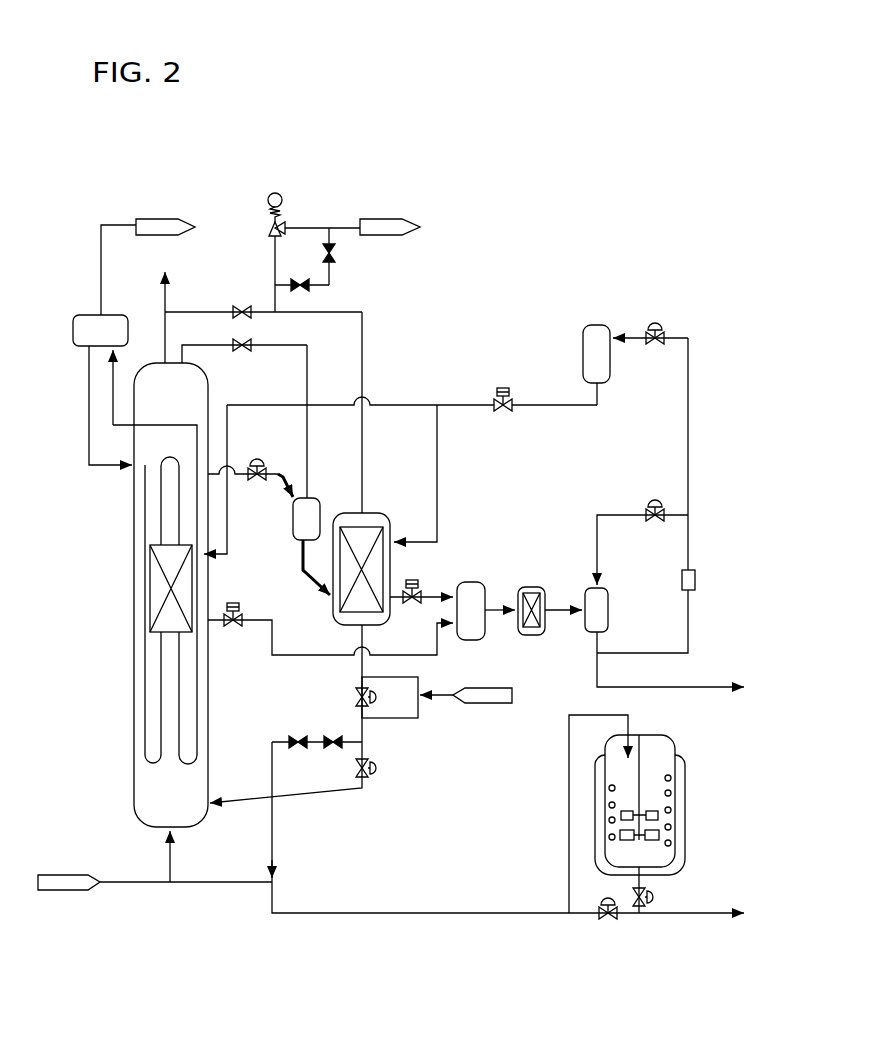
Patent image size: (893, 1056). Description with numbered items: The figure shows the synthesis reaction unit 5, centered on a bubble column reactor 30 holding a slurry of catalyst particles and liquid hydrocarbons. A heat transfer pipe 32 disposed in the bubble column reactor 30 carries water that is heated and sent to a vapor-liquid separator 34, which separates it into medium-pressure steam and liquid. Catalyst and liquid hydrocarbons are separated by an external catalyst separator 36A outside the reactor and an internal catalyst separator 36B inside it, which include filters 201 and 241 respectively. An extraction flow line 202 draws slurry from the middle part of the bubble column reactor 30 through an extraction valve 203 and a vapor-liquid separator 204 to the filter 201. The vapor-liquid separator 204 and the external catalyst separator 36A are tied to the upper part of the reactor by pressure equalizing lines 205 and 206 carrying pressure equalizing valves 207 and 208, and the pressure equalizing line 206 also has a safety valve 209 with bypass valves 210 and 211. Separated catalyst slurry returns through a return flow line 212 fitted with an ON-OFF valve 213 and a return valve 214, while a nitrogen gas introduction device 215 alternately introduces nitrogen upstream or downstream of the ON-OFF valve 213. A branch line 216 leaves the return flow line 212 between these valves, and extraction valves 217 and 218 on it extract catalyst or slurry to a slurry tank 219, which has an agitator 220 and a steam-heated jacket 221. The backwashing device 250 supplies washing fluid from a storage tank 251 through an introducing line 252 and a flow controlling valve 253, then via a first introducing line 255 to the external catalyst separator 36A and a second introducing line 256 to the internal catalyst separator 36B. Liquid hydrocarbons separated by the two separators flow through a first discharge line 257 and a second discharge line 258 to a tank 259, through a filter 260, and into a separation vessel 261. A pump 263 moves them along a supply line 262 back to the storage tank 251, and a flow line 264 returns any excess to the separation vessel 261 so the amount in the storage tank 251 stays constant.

The synthesis reaction unit 5 is at (570, 166).
The bubble column reactor 30 is at (127, 752).
The heat transfer pipe 32 is at (144, 510).
The vapor-liquid separator 34 is at (73, 320).
The external catalyst separator 36A is at (431, 535).
The internal catalyst separator 36B is at (107, 582).
The filter 241 is at (158, 595).
The filter 201 is at (372, 513).
The extraction flow line 202 is at (272, 508).
The extraction valve 203 is at (263, 466).
The vapor-liquid separator 204 is at (315, 498).
The pressure equalizing line 205 is at (312, 378).
The pressure equalizing line 206 is at (365, 340).
The pressure equalizing valve 207 is at (252, 345).
The pressure equalizing valve 208 is at (242, 307).
The safety valve 209 is at (305, 197).
The bypass valve 210 is at (309, 287).
The bypass valve 211 is at (337, 253).
The return flow line 212 is at (305, 802).
The ON-OFF valve 213 is at (355, 690).
The return valve 214 is at (374, 776).
The nitrogen gas introduction device 215 is at (478, 705).
The branch line 216 is at (264, 815).
The extraction valve 217 is at (325, 742).
The extraction valve 218 is at (290, 742).
The slurry tank 219 is at (684, 748).
The agitator 220 is at (653, 813).
The jacket 221 is at (684, 833).
The backwashing device 250 is at (677, 289).
The storage tank 251 is at (594, 326).
The introducing line 252 is at (540, 408).
The flow controlling valve 253 is at (506, 386).
The first introducing line 255 is at (442, 470).
The second introducing line 256 is at (427, 405).
The first discharge line 257 is at (425, 584).
The second discharge line 258 is at (256, 630).
The tank 259 is at (488, 596).
The filter 260 is at (547, 596).
The separation vessel 261 is at (584, 622).
The supply line 262 is at (691, 472).
The pump 263 is at (697, 578).
The flow line 264 is at (610, 512).